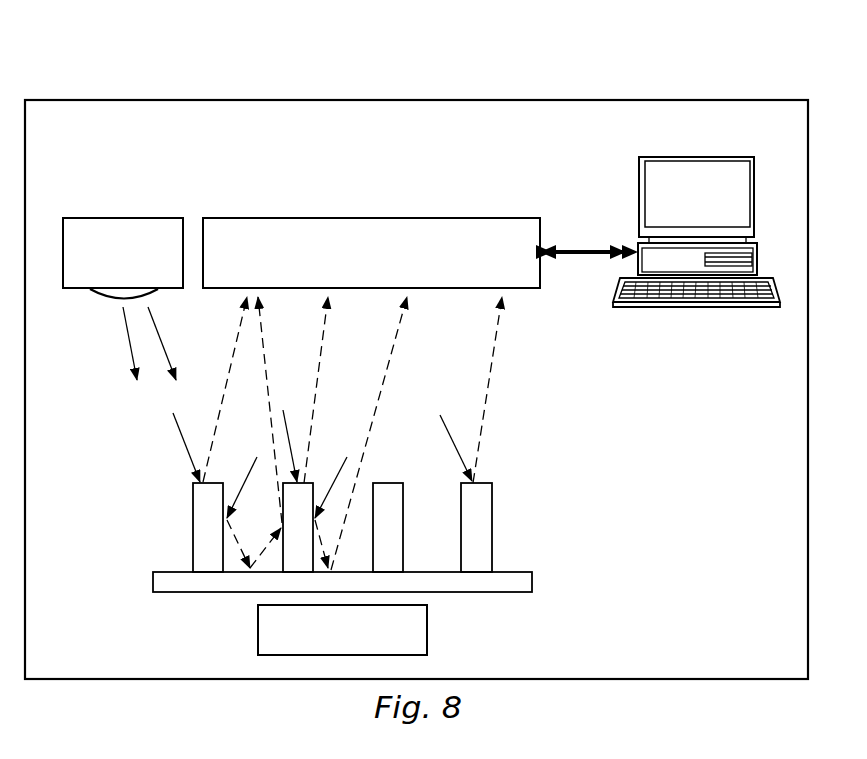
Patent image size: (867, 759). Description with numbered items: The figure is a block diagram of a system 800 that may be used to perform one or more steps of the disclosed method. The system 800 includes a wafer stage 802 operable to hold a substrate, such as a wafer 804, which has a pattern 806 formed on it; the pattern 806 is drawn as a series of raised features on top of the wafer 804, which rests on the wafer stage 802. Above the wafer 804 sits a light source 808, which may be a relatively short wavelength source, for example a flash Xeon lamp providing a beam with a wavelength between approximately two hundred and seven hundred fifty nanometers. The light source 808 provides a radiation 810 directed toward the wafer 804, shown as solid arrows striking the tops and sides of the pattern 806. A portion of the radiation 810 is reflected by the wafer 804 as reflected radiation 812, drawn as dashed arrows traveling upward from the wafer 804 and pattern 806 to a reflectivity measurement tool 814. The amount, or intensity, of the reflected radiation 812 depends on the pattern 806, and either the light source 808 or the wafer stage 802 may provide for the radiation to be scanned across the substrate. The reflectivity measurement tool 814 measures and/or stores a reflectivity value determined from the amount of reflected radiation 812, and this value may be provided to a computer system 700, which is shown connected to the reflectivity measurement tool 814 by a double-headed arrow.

The computer system 700 is at (705, 157).
The system 800 is at (175, 79).
The wafer stage 802 is at (428, 630).
The wafer 804 is at (533, 582).
The pattern 806 is at (193, 532).
The light source 808 is at (121, 218).
The radiation 810 is at (163, 347).
The reflected radiation 812 is at (318, 347).
The reflectivity measurement tool 814 is at (322, 218).